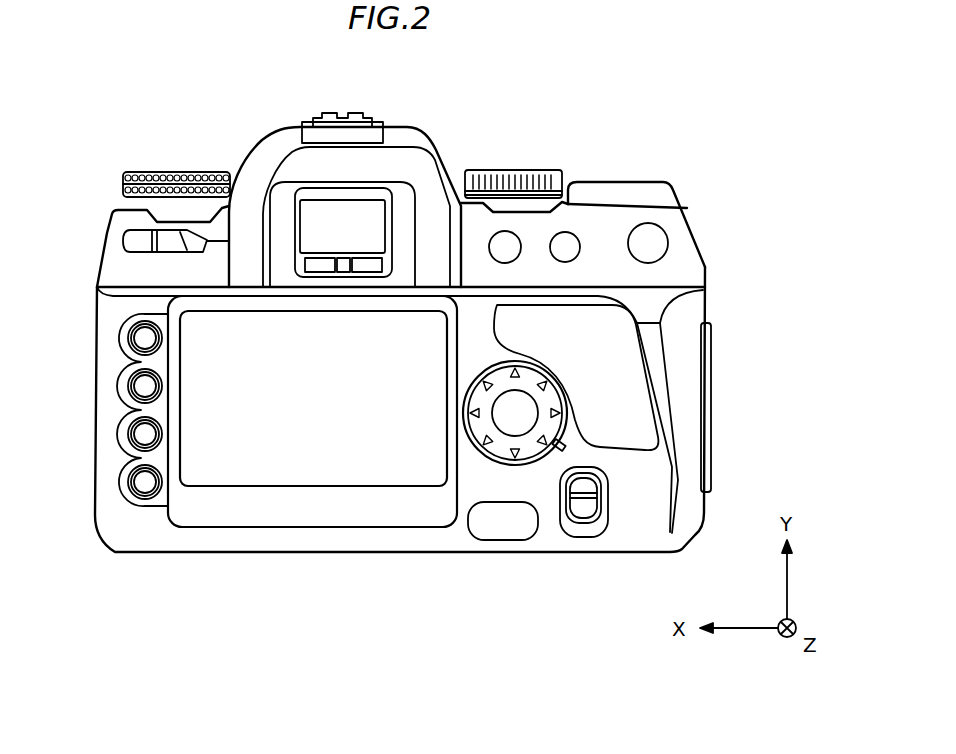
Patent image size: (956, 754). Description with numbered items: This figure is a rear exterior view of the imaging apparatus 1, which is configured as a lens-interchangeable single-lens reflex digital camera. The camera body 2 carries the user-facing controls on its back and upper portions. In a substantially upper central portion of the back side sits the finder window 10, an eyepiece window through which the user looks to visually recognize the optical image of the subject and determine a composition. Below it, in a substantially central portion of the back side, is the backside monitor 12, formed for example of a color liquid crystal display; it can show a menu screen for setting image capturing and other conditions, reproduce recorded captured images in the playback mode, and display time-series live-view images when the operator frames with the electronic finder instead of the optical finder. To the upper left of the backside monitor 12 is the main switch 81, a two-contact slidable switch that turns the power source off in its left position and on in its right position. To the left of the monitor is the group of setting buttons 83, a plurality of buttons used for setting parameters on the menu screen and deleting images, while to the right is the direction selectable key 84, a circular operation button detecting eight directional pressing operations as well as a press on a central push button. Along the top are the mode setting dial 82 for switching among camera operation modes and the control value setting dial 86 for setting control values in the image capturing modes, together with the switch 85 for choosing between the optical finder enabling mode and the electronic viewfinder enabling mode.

The imaging apparatus 1 is at (32, 91).
The camera body 2 is at (694, 301).
The finder window 10 is at (348, 215).
The backside monitor 12 is at (270, 455).
The main switch 81 is at (123, 243).
The mode setting dial 82 is at (514, 170).
The group of setting buttons 83 is at (85, 317).
The direction selectable key 84 is at (500, 465).
The switch 85 is at (647, 242).
The control value setting dial 86 is at (178, 172).